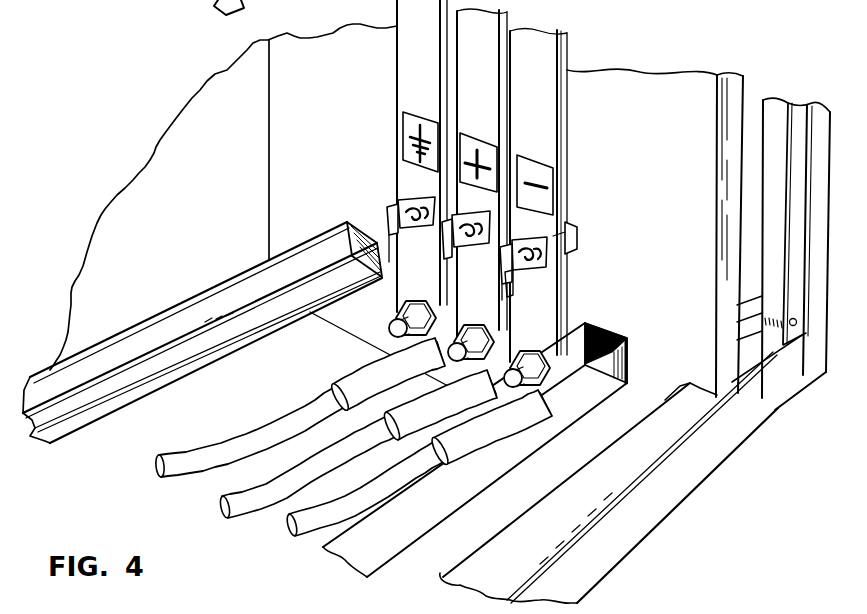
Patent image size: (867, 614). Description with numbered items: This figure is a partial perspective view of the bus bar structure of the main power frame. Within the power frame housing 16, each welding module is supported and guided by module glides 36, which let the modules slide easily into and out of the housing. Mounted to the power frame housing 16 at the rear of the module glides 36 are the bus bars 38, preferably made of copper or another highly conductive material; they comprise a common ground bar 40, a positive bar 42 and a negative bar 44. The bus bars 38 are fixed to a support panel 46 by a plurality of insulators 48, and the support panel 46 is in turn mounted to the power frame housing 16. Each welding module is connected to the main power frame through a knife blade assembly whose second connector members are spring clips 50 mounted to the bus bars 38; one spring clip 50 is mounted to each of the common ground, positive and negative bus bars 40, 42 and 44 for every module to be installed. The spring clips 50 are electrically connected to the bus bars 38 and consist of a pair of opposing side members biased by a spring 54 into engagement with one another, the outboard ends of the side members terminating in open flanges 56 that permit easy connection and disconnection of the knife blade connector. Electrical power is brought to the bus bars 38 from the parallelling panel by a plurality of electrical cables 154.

The power frame housing 16 is at (633, 533).
The module glides 36 is at (200, 308).
The bus bars 38 is at (573, 50).
The common ground bar 40 is at (405, 60).
The positive bar 42 is at (465, 77).
The negative bar 44 is at (522, 86).
The support panel 46 is at (672, 90).
The insulators 48 is at (577, 221).
The spring clips 50 is at (402, 197).
The spring 54 is at (545, 266).
The open flanges 56 is at (388, 222).
The electrical cables 154 is at (202, 486).